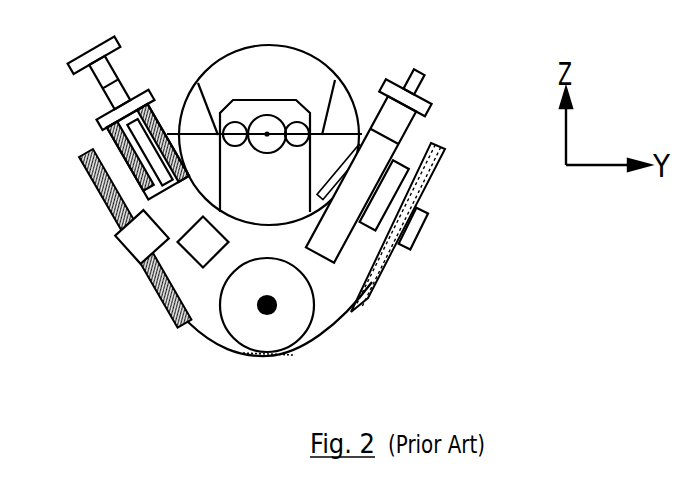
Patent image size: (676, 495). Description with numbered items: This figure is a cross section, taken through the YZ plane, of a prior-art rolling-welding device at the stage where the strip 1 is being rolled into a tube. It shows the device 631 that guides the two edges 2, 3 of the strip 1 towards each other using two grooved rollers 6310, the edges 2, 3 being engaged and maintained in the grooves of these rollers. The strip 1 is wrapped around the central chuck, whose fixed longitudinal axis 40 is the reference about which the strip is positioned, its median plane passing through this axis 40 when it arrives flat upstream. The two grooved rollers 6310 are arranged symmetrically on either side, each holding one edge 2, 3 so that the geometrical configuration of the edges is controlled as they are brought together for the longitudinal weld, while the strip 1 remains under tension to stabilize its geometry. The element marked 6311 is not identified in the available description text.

The strip 1 is at (223, 348).
The edge of the strip 2 is at (167, 303).
The edge of the strip 3 is at (375, 285).
The fixed longitudinal axis 40 is at (272, 312).
The device to guide the edges 631 is at (105, 267).
The grooved rollers 6310 is at (153, 285).
The rotary bearing body 6311 is at (298, 72).